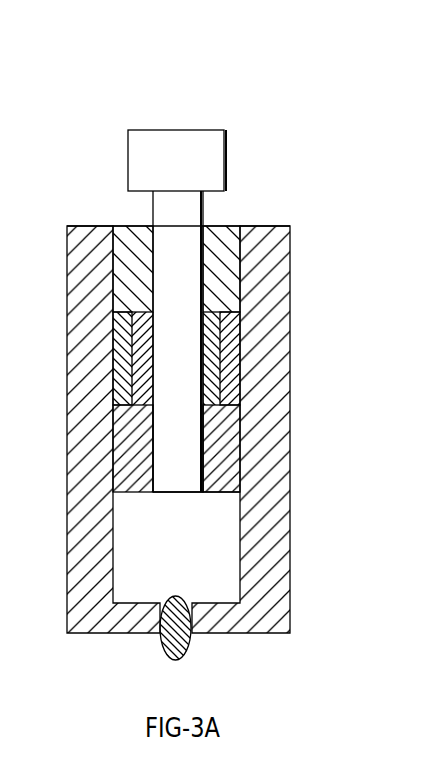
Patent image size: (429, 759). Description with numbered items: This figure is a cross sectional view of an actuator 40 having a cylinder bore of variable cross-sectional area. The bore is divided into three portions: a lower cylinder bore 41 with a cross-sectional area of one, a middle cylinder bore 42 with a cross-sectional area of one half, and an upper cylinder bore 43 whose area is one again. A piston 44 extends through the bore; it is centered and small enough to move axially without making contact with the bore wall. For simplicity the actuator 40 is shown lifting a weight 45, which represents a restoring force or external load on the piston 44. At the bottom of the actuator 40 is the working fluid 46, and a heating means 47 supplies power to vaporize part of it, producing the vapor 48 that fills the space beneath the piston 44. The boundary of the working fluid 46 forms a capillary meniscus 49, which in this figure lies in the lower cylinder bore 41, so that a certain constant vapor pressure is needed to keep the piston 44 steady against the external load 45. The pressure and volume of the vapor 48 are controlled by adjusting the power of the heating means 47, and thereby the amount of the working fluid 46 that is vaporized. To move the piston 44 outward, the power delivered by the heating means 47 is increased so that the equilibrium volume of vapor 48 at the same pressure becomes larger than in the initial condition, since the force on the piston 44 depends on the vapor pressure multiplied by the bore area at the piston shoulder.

The actuator 40 is at (292, 604).
The lower cylinder bore 41 is at (290, 572).
The middle cylinder bore 42 is at (235, 355).
The upper cylinder bore 43 is at (283, 268).
The piston 44 is at (204, 213).
The weight 45 is at (226, 160).
The working fluid 46 is at (215, 440).
The heating means 47 is at (190, 648).
The vapor 48 is at (210, 550).
The capillary meniscus 49 is at (232, 491).